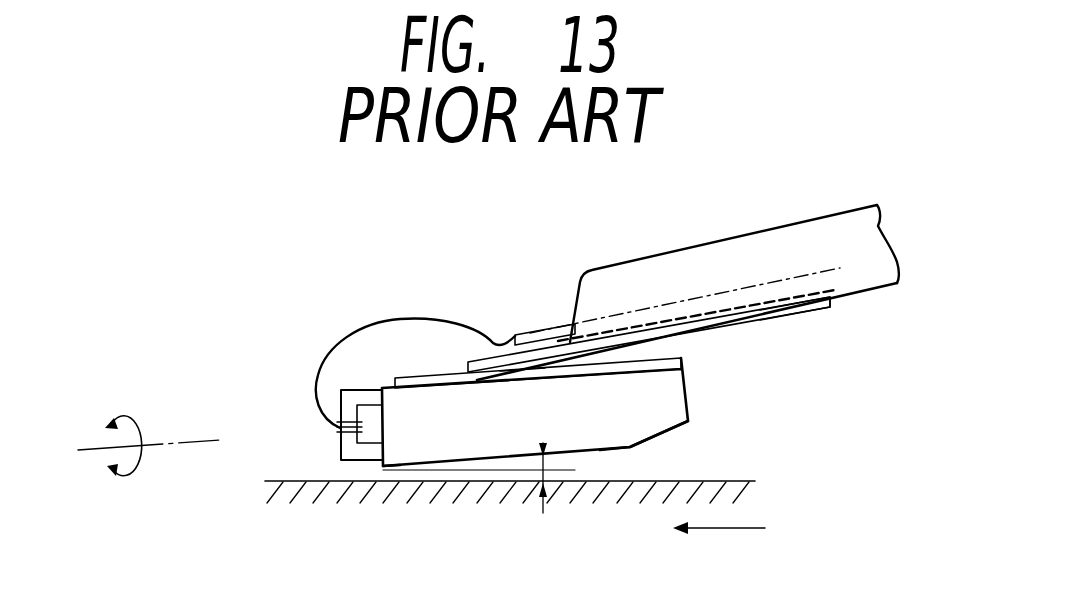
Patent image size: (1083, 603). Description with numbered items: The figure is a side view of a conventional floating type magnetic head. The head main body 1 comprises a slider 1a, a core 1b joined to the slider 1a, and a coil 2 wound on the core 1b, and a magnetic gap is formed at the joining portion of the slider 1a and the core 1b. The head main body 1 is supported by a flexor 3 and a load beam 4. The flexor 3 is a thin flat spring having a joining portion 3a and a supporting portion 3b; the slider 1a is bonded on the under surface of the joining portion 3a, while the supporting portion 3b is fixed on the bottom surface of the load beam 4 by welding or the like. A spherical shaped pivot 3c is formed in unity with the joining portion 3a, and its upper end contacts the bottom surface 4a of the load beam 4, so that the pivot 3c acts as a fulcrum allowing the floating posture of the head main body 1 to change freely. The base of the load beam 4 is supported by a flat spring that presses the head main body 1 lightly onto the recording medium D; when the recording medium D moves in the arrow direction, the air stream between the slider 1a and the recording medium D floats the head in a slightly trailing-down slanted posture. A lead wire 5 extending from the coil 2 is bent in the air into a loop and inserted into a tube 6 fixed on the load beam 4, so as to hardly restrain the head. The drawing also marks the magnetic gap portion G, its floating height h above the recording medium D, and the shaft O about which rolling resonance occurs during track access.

The head main body 1 is at (712, 392).
The slider 1a is at (628, 427).
The core 1b is at (349, 452).
The coil 2 is at (338, 422).
The flexor 3 is at (424, 365).
The joining portion 3a is at (678, 358).
The supporting portion 3b is at (817, 307).
The pivot 3c is at (523, 378).
The load beam 4 is at (680, 263).
The bottom surface 4a is at (556, 352).
The lead wire 5 is at (330, 343).
The tube 6 is at (528, 335).
The magnetic gap portion G is at (379, 480).
The floating height h is at (543, 513).
The recording medium D is at (703, 483).
The shaft O is at (136, 446).